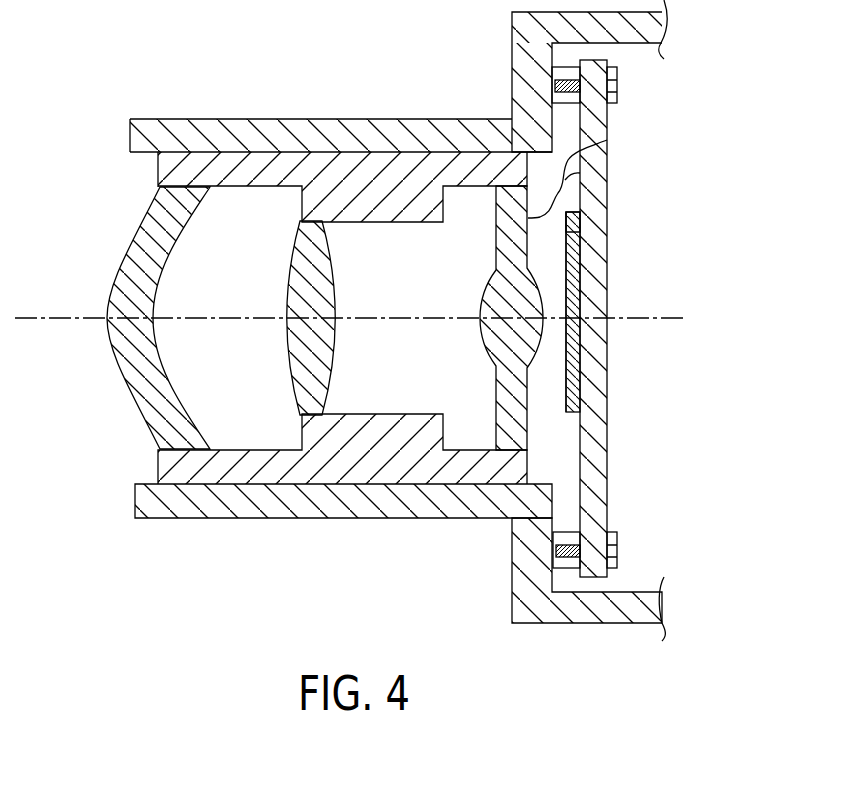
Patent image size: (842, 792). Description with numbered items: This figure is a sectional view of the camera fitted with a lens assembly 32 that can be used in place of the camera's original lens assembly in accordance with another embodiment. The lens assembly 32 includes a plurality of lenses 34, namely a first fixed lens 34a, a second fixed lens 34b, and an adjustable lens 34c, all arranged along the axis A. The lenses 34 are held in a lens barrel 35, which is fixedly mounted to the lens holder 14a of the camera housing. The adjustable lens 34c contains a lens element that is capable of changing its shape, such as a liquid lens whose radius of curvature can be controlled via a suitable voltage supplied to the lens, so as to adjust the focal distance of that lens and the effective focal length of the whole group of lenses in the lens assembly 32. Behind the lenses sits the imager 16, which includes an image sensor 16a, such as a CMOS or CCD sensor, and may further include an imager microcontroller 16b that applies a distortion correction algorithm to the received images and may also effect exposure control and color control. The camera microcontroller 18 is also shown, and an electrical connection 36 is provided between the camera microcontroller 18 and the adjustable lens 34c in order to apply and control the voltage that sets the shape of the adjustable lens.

The lens holder 14a is at (383, 130).
The imager 16 is at (607, 307).
The image sensor 16a is at (570, 300).
The imager microcontroller 16b is at (570, 233).
The camera microcontroller 18 is at (608, 176).
The lens assembly 32 is at (305, 325).
The lenses 34 is at (291, 318).
The first fixed lens 34a is at (135, 387).
The second fixed lens 34b is at (302, 370).
The adjustable lens 34c is at (497, 370).
The lens barrel 35 is at (212, 465).
The electrical connection 36 is at (607, 140).
The axis A is at (669, 312).